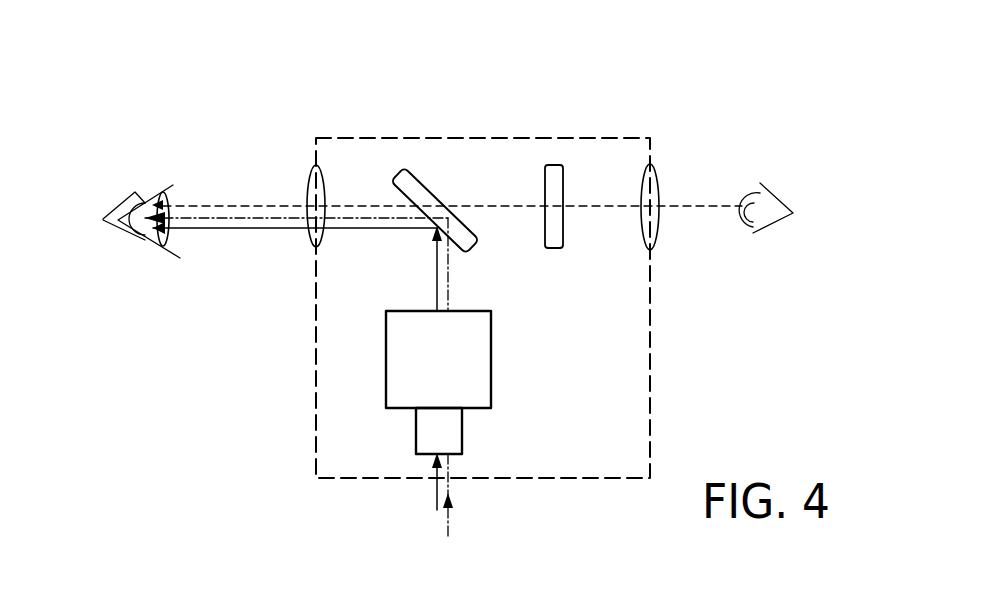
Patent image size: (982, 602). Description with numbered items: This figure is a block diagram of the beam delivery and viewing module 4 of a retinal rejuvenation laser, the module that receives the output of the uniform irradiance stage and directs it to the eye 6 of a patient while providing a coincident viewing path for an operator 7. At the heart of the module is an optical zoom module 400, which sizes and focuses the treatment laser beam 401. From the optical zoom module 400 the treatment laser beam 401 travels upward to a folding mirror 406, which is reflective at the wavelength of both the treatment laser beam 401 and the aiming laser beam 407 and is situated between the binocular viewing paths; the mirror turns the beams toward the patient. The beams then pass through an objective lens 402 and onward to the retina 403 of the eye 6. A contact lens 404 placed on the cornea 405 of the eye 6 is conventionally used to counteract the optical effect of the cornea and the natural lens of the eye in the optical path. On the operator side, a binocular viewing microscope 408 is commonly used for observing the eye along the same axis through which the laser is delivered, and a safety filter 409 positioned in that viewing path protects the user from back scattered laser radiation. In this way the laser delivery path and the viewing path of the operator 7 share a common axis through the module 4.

The beam delivery and viewing module 4 is at (315, 385).
The eye 6 is at (117, 204).
The operator 7 is at (785, 195).
The optical zoom module 400 is at (491, 352).
The treatment laser beam 401 is at (242, 229).
The objective lens 402 is at (305, 190).
The retina 403 is at (110, 222).
The contact lens 404 is at (172, 193).
The cornea 405 is at (143, 210).
The folding mirror 406 is at (428, 183).
The aiming laser beam 407 is at (370, 217).
The binocular viewing microscope 408 is at (657, 170).
The safety filter 409 is at (563, 167).